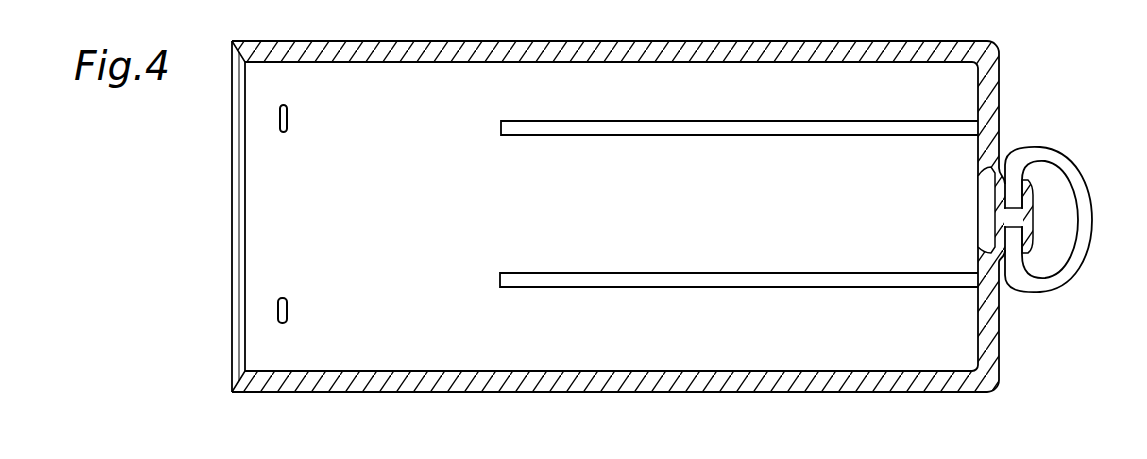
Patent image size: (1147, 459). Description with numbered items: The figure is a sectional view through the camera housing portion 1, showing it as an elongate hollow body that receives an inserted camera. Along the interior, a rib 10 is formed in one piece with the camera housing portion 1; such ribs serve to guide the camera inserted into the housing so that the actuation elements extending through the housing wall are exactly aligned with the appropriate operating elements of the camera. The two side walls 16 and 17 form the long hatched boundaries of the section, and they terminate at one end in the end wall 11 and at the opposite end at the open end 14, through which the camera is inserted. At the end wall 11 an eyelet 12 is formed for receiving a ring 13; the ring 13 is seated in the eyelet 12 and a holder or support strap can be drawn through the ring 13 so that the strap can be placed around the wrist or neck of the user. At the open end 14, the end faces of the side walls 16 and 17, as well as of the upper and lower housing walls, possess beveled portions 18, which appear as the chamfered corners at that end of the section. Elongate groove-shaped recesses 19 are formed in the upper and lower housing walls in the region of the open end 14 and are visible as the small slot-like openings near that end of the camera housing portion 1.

The camera housing portion 1 is at (851, 40).
The rib 10 is at (722, 124).
The end wall 11 is at (992, 92).
The eyelet 12 is at (1035, 310).
The ring 13 is at (1067, 170).
The open end 14 is at (182, 208).
The side wall 16 is at (653, 43).
The side wall 17 is at (530, 382).
The beveled portion 18 is at (233, 53).
The elongate groove-shaped recess 19 is at (289, 119).